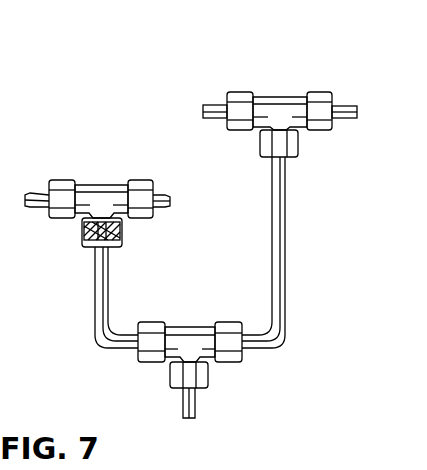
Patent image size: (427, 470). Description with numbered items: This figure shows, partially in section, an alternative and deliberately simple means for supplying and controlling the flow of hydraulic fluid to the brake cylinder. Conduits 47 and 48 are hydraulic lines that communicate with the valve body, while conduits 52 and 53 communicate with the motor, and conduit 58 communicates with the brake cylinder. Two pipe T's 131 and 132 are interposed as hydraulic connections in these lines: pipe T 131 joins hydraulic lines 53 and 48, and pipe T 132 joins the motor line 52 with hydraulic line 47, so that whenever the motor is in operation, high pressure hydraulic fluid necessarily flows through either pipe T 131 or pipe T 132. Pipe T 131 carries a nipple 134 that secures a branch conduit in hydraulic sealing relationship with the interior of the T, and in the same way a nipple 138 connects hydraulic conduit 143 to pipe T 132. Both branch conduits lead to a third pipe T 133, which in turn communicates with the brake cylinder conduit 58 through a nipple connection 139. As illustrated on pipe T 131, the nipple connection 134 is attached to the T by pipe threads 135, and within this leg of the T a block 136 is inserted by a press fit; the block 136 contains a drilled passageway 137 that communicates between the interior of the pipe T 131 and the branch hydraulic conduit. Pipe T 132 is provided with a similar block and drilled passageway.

The conduit 47 is at (345, 107).
The conduit 48 is at (157, 195).
The conduit 52 is at (213, 108).
The conduit 53 is at (40, 200).
The brake cylinder conduit 58 is at (183, 403).
The pipe T 131 is at (95, 190).
The pipe T 132 is at (276, 97).
The pipe T 133 is at (188, 327).
The nipple 134 is at (113, 248).
The pipe threads 135 is at (120, 229).
The block 136 is at (85, 231).
The drilled passageway 137 is at (95, 252).
The nipple 138 is at (300, 143).
The nipple connection 139 is at (208, 375).
The hydraulic conduit 143 is at (287, 243).